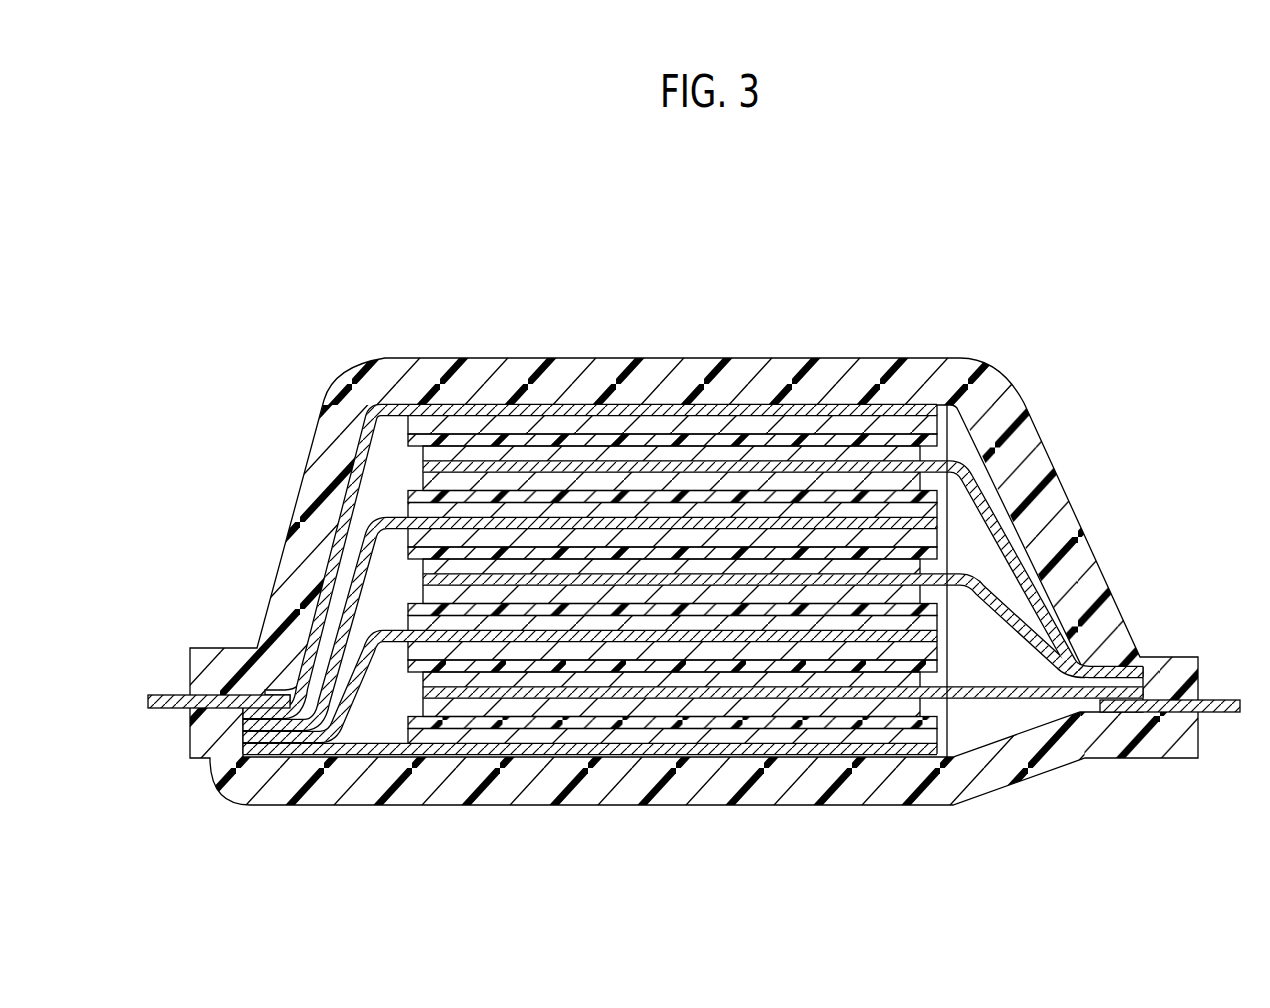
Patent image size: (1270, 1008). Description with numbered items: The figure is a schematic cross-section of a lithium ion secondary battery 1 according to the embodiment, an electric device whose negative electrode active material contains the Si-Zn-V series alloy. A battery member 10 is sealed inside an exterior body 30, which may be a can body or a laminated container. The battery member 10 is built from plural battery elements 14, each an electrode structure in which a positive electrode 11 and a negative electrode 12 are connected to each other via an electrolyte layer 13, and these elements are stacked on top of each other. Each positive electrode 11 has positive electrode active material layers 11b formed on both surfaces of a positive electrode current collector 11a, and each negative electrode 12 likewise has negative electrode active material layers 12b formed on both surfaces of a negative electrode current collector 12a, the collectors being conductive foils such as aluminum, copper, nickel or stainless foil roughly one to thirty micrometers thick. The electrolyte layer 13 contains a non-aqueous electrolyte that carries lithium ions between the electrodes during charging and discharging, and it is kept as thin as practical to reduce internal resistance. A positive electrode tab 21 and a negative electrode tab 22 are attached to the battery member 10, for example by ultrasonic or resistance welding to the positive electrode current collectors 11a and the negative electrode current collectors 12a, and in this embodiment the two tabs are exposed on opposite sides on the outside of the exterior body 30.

The lithium ion secondary battery 1 is at (279, 335).
The battery member 10 is at (693, 501).
The positive electrode 11 is at (783, 481).
The positive electrode current collector 11a is at (682, 465).
The positive electrode active material layer 11b is at (570, 455).
The negative electrode 12 is at (590, 500).
The negative electrode current collector 12a is at (845, 523).
The negative electrode active material layer 12b is at (470, 427).
The electrolyte layer 13 is at (523, 440).
The battery element 14 is at (672, 487).
The positive electrode tab 21 is at (1220, 698).
The negative electrode tab 22 is at (173, 695).
The exterior body 30 is at (1177, 655).